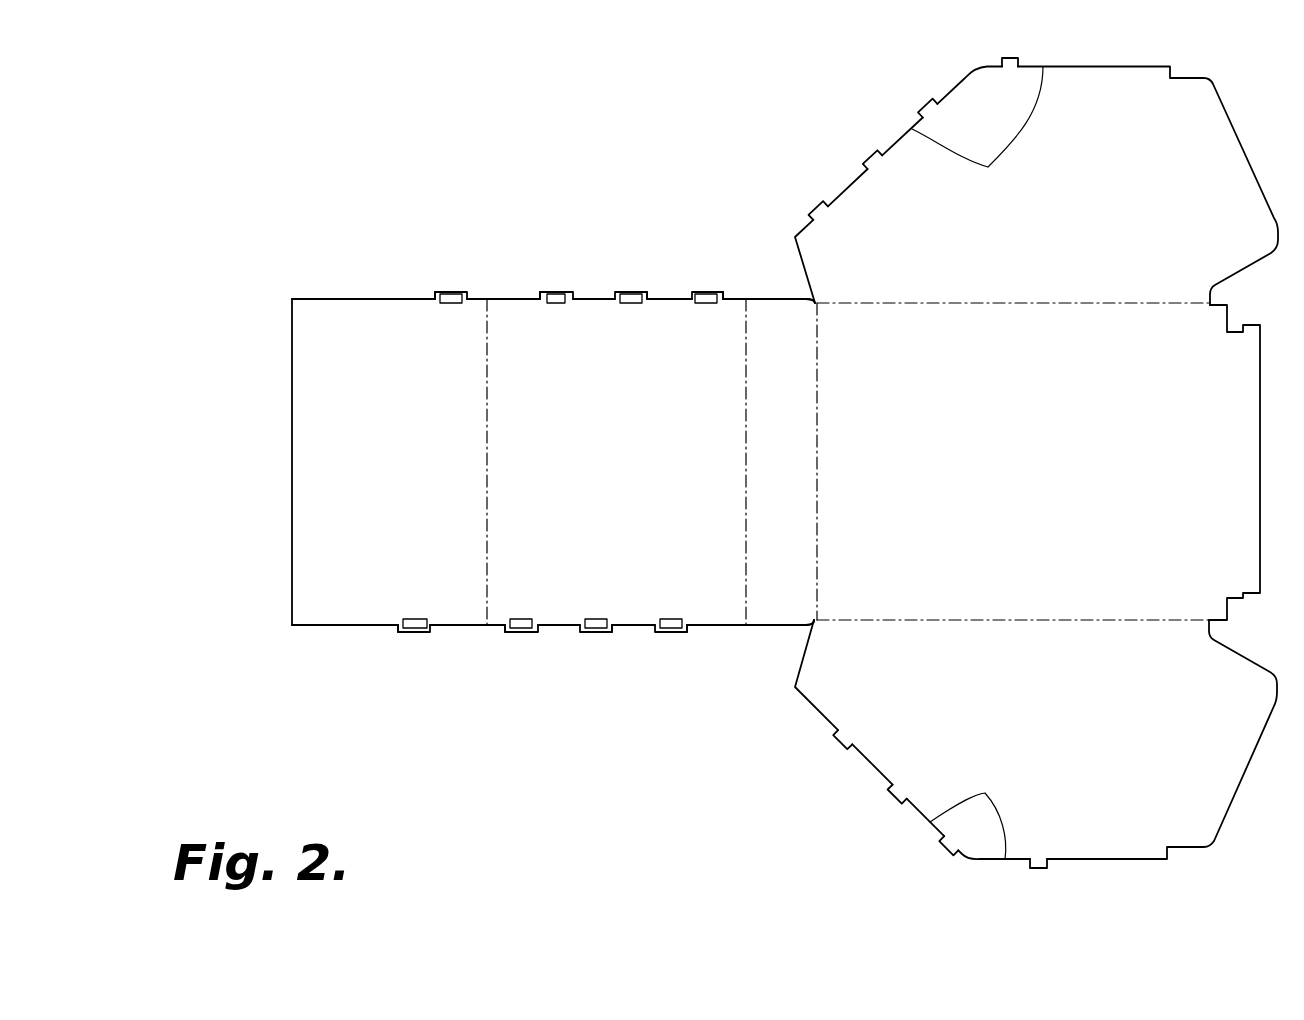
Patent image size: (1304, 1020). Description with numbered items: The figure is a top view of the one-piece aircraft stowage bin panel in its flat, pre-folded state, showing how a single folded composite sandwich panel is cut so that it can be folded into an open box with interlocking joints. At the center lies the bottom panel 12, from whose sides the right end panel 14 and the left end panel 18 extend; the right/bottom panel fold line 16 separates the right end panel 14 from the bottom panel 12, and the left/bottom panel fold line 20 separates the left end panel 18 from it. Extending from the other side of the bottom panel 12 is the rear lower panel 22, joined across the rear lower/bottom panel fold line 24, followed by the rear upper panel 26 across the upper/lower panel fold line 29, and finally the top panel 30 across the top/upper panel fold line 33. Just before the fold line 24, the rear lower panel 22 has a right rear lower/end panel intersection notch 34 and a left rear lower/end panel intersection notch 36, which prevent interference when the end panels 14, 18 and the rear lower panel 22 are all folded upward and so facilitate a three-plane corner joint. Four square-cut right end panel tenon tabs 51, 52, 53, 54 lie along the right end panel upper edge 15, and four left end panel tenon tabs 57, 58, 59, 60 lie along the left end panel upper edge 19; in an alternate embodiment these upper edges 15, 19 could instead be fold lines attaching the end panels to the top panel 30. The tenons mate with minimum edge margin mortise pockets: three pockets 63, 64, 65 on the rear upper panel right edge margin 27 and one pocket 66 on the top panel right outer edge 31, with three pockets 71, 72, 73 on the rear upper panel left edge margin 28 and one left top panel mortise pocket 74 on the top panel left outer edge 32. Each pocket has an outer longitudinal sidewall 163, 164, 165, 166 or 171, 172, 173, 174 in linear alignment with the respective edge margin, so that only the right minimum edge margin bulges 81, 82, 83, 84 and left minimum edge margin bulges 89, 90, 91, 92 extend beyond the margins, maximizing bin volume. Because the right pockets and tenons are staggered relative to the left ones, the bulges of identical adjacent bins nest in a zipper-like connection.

The bottom panel 12 is at (1000, 483).
The right end panel 14 is at (1046, 242).
The right end panel upper edge 15 is at (988, 167).
The right/bottom panel fold line 16 is at (989, 305).
The left end panel 18 is at (1008, 724).
The left end panel upper edge 19 is at (985, 793).
The left/bottom panel fold line 20 is at (990, 618).
The rear lower panel 22 is at (770, 478).
The rear lower/bottom panel fold line 24 is at (818, 486).
The rear upper panel 26 is at (588, 477).
The rear upper panel right edge margin 27 is at (598, 299).
The rear upper panel left edge margin 28 is at (616, 651).
The upper/lower panel fold line 29 is at (711, 462).
The top panel 30 is at (365, 481).
The top panel right outer edge 31 is at (322, 297).
The top panel left outer edge 32 is at (323, 627).
The top/upper panel fold line 33 is at (487, 471).
The right rear lower/end panel intersection notch 34 is at (815, 305).
The left rear lower/end panel intersection notch 36 is at (814, 621).
The right end panel tenon tab 51 is at (806, 212).
The right end panel tenon tab 52 is at (868, 156).
The right end panel tenon tab 53 is at (923, 108).
The right end panel tenon tab 54 is at (1009, 58).
The left end panel tenon tab 57 is at (835, 741).
The left end panel tenon tab 58 is at (889, 797).
The left end panel tenon tab 59 is at (947, 847).
The left end panel tenon tab 60 is at (1045, 869).
The minimum edge margin mortise pocket 63 is at (708, 304).
The minimum edge margin mortise pocket 64 is at (630, 304).
The minimum edge margin mortise pocket 65 is at (555, 304).
The minimum edge margin mortise pocket 66 is at (447, 304).
The minimum edge margin mortise pocket 71 is at (676, 620).
The minimum edge margin mortise pocket 72 is at (602, 620).
The minimum edge margin mortise pocket 73 is at (525, 620).
The left top panel minimum edge margin mortise pocket 74 is at (412, 620).
The right minimum edge margin bulge 81 is at (727, 292).
The right minimum edge margin bulge 82 is at (644, 292).
The right minimum edge margin bulge 83 is at (545, 291).
The right minimum edge margin bulge 84 is at (434, 291).
The left minimum edge margin bulge 89 is at (690, 635).
The left minimum edge margin bulge 90 is at (608, 632).
The left minimum edge margin bulge 91 is at (508, 634).
The left minimum edge margin bulge 92 is at (400, 633).
The outer longitudinal sidewall 163 is at (706, 291).
The outer longitudinal sidewall 164 is at (631, 291).
The outer longitudinal sidewall 165 is at (555, 291).
The outer longitudinal sidewall 166 is at (450, 291).
The outer longitudinal sidewall 171 is at (670, 630).
The outer longitudinal sidewall 172 is at (593, 630).
The outer longitudinal sidewall 173 is at (520, 632).
The outer longitudinal sidewall 174 is at (415, 632).